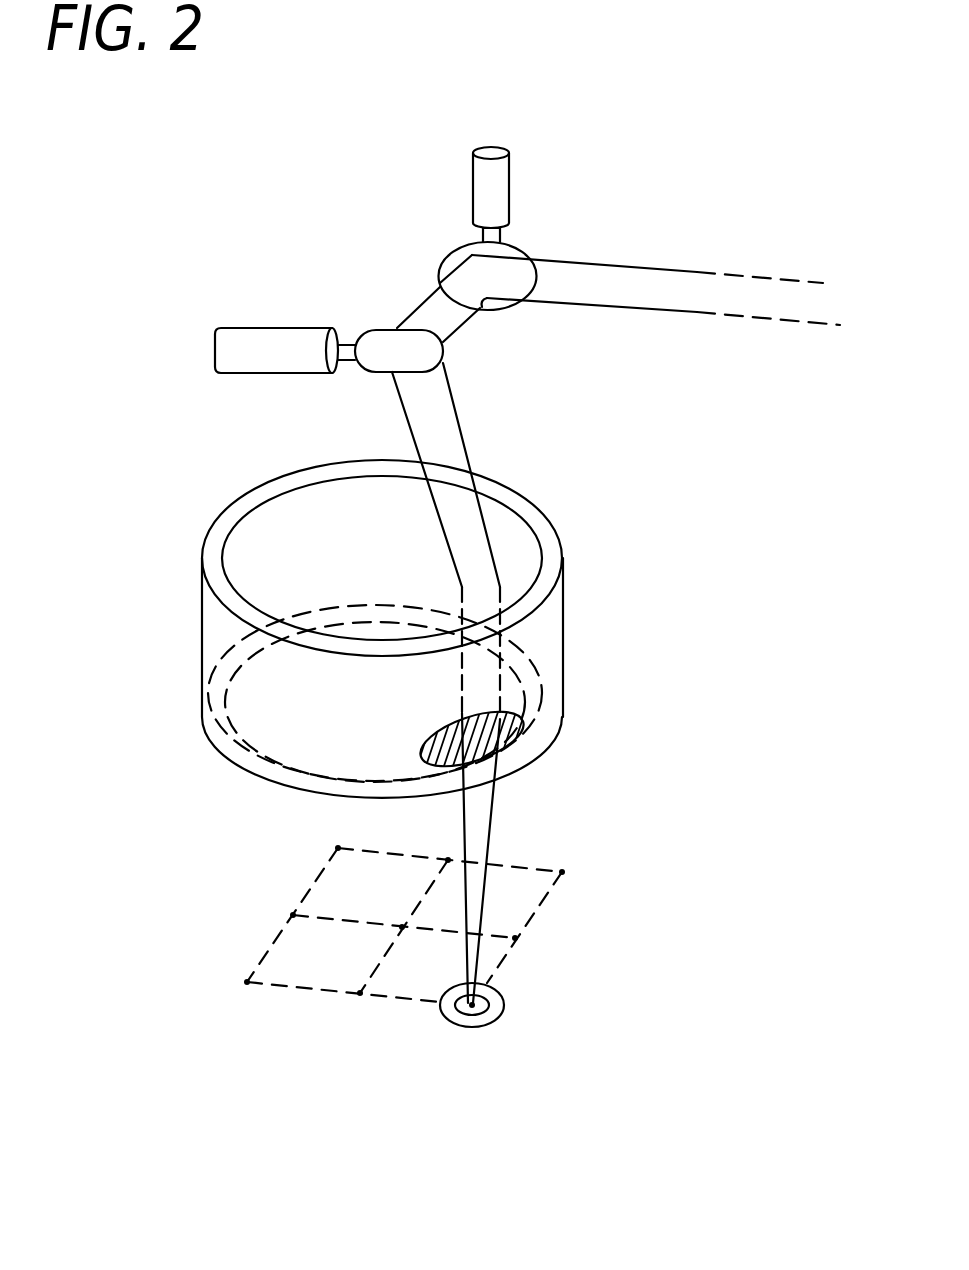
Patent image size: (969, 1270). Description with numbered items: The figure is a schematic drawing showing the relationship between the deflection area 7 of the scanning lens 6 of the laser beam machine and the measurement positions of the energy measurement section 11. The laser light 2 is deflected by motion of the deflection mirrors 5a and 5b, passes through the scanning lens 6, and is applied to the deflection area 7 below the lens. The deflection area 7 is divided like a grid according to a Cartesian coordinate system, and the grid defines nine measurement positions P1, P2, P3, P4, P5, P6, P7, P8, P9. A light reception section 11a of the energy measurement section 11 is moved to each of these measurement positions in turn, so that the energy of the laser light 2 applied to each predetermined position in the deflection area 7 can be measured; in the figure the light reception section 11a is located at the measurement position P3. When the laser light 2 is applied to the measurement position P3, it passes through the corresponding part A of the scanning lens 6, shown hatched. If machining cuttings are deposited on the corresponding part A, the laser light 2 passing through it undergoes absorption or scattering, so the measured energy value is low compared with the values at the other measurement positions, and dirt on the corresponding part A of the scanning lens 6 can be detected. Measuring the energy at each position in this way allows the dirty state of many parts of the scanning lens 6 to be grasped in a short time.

The laser light 2 is at (467, 517).
The deflection mirror 5a is at (485, 185).
The deflection mirror 5b is at (275, 347).
The scanning lens 6 is at (547, 627).
The corresponding part A is at (525, 733).
The deflection area 7 is at (547, 897).
The energy measurement section 11 is at (493, 1022).
The light reception section 11a is at (504, 1003).
The measurement position P1 is at (231, 965).
The measurement position P2 is at (353, 1014).
The measurement position P3 is at (461, 1037).
The measurement position P4 is at (541, 951).
The measurement position P5 is at (391, 907).
The measurement position P6 is at (274, 897).
The measurement position P7 is at (317, 831).
The measurement position P8 is at (436, 838).
The measurement position P9 is at (571, 852).